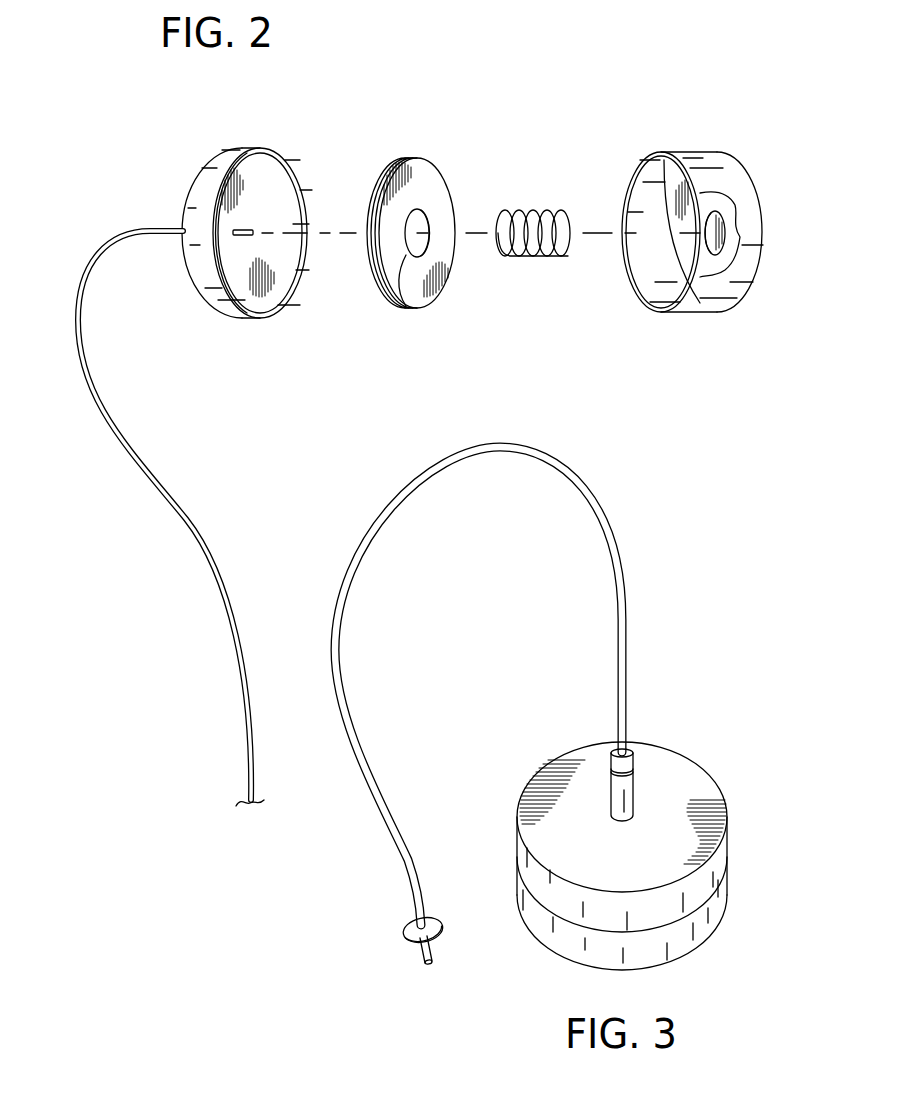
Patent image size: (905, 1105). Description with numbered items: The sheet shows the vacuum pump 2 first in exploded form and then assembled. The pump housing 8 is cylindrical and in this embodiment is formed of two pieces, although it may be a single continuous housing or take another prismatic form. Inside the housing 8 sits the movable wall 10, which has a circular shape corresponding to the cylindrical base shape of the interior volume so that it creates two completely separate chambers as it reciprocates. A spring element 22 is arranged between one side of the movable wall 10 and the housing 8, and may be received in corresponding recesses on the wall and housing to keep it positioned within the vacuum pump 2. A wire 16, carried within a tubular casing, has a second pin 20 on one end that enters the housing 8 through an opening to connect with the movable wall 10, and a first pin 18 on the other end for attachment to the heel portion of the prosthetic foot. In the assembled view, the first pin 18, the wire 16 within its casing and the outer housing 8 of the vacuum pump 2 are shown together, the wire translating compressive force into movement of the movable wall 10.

In FIG. 3, the vacuum pump 2 is at (751, 679).
In FIG. 3, the housing 8 is at (712, 787).
In FIG. 2, the movable wall 10 is at (421, 168).
In FIG. 2, the wire 16 is at (214, 613).
In FIG. 3, the wire 16 is at (621, 548).
In FIG. 3, the first pin 18 is at (415, 958).
In FIG. 2, the second pin 20 is at (245, 228).
In FIG. 2, the spring element 22 is at (540, 259).